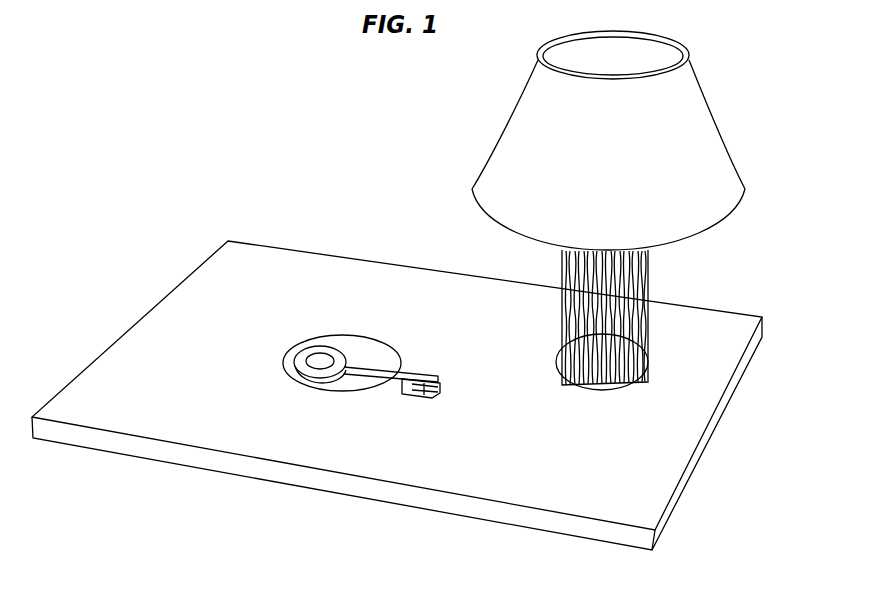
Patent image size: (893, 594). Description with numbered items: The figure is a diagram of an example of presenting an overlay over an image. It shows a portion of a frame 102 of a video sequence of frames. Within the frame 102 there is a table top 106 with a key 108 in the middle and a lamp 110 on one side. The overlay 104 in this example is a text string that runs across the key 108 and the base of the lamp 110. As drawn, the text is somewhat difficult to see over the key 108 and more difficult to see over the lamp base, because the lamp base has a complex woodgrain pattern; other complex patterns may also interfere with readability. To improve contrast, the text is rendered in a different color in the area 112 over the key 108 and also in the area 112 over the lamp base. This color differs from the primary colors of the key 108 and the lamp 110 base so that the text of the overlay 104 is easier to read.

The frame 102 is at (108, 156).
The overlay 104 is at (220, 374).
The table top 106 is at (293, 263).
The key 108 is at (411, 395).
The lamp 110 is at (648, 271).
The area 112 is at (340, 393).